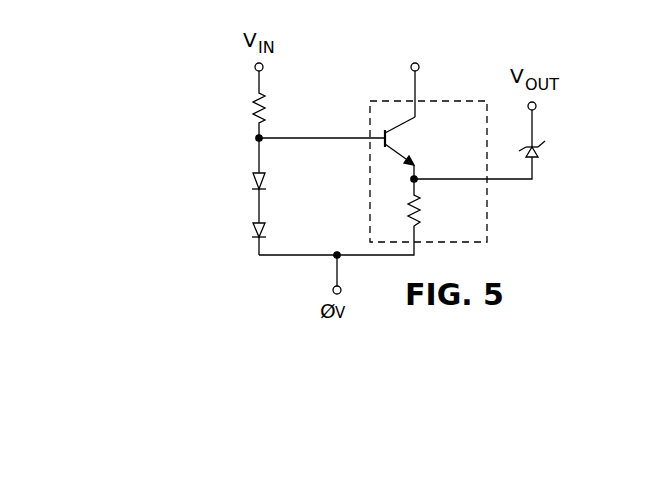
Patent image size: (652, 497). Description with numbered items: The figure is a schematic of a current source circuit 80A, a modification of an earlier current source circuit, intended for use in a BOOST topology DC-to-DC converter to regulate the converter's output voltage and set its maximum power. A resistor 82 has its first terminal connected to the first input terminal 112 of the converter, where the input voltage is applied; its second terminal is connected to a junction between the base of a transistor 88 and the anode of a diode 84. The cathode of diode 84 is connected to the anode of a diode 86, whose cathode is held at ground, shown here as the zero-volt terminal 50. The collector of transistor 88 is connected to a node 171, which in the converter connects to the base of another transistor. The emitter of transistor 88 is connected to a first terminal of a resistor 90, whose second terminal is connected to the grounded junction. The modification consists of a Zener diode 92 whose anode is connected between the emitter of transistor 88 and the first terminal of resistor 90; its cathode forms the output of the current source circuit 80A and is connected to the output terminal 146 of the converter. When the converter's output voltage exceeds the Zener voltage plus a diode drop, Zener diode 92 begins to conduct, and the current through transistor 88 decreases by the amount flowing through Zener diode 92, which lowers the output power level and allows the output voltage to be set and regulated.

The current source circuit 80A is at (148, 80).
The first input terminal 112 is at (254, 68).
The resistor 82 is at (253, 100).
The diode 84 is at (255, 177).
The diode 86 is at (254, 226).
The ground terminal 50 is at (333, 290).
The node 171 is at (410, 67).
The transistor 88 is at (400, 132).
The resistor 90 is at (417, 213).
The Zener diode 92 is at (537, 156).
The output terminal 146 is at (538, 107).